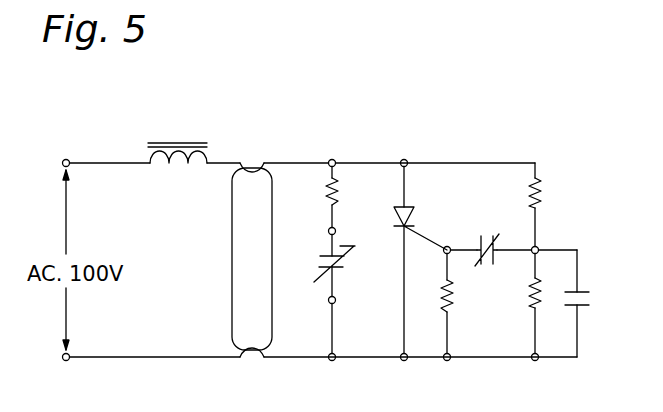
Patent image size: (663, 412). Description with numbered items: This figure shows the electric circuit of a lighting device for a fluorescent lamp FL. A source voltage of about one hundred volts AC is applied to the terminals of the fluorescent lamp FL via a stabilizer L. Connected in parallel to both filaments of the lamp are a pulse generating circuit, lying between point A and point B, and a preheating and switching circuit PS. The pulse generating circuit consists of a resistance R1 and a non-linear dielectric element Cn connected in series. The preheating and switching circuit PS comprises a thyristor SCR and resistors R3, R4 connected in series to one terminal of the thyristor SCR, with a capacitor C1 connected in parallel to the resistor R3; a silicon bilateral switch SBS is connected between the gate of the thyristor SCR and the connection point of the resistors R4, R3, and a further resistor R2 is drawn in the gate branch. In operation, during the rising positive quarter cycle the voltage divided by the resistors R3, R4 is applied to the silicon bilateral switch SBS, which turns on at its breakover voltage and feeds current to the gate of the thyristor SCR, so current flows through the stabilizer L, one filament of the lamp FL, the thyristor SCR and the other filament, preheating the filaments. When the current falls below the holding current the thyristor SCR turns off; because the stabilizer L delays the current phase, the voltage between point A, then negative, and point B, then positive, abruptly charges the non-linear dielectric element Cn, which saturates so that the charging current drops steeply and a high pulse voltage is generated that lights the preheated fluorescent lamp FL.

The stabilizer L is at (167, 172).
The fluorescent lamp FL is at (240, 300).
The point A is at (333, 149).
The point B is at (329, 375).
The resistance R1 is at (343, 201).
The non-linear dielectric element Cn is at (346, 268).
The thyristor SCR is at (416, 219).
The silicon bilateral switch SBS is at (480, 237).
The resistor R2 is at (458, 298).
The resistor R3 is at (530, 293).
The resistor R4 is at (545, 196).
The capacitor C1 is at (591, 300).
The preheating and switching circuit PS is at (469, 139).